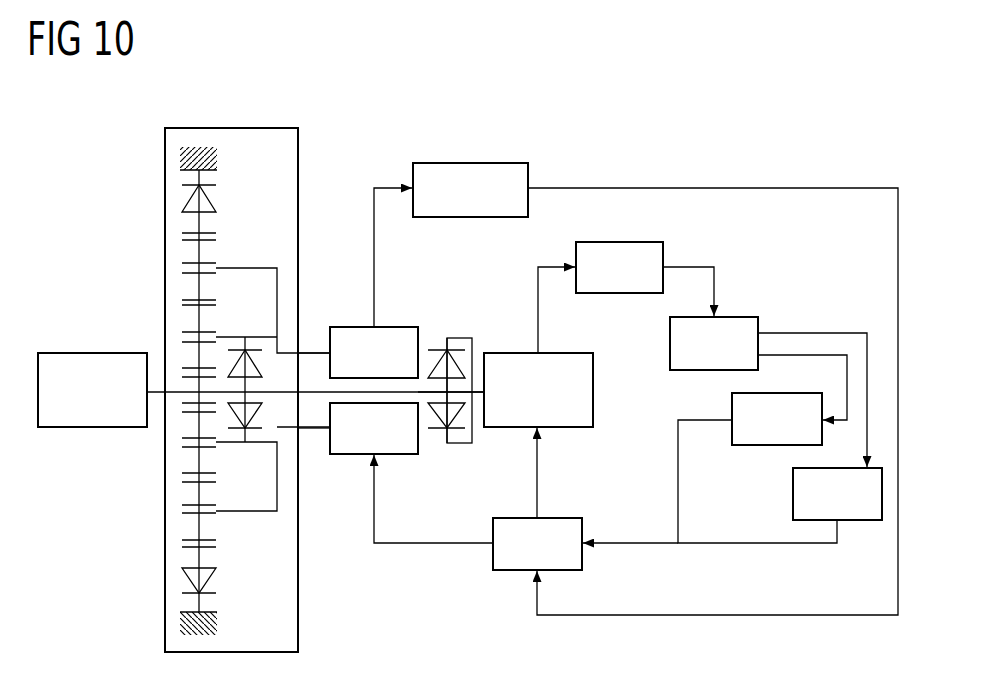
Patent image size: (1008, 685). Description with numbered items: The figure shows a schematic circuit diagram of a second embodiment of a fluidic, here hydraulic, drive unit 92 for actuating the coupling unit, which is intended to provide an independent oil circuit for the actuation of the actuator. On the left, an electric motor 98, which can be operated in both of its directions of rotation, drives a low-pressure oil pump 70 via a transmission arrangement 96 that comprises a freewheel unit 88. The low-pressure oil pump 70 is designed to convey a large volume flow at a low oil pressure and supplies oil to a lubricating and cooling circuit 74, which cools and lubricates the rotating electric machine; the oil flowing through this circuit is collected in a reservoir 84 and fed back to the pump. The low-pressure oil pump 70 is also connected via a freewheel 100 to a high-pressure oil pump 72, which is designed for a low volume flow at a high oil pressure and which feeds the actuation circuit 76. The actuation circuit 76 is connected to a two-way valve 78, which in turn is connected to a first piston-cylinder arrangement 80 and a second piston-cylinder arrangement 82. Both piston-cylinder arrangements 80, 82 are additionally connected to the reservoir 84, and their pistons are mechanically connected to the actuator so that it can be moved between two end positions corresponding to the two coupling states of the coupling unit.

The low-pressure oil pump 70 is at (348, 327).
The high-pressure oil pump 72 is at (512, 353).
The lubricating and cooling circuit 74 is at (472, 163).
The actuation circuit 76 is at (615, 242).
The 1-2-way valve 78 is at (743, 317).
The 1-2 piston-cylinder arrangement 80 is at (757, 445).
The 2-1 piston-cylinder arrangement 82 is at (856, 520).
The reservoir 84 is at (512, 570).
The freewheel unit 88 is at (252, 457).
The fluidic drive unit 92 is at (771, 136).
The transmission arrangement 96 is at (253, 117).
The electric motor 98 is at (91, 353).
The freewheel 100 is at (438, 454).